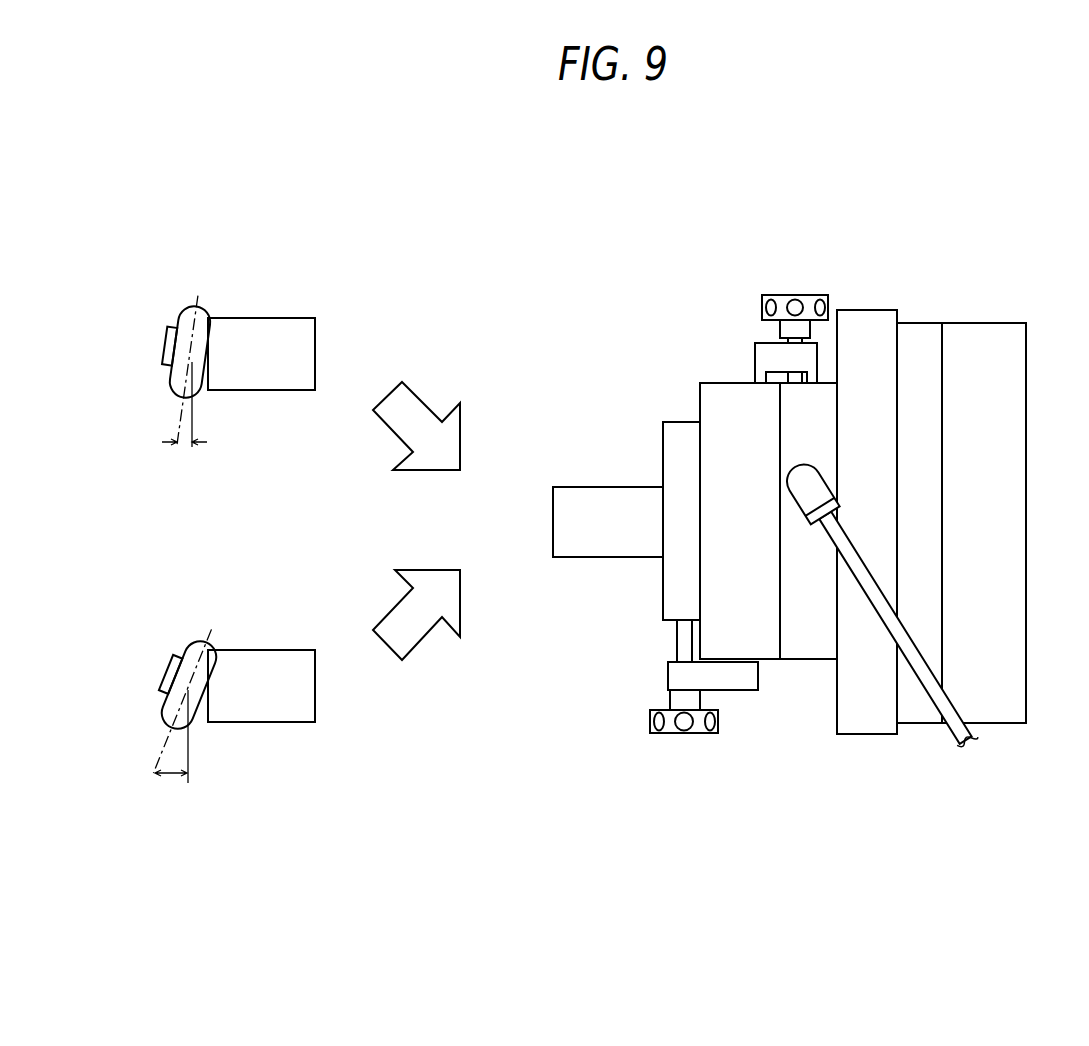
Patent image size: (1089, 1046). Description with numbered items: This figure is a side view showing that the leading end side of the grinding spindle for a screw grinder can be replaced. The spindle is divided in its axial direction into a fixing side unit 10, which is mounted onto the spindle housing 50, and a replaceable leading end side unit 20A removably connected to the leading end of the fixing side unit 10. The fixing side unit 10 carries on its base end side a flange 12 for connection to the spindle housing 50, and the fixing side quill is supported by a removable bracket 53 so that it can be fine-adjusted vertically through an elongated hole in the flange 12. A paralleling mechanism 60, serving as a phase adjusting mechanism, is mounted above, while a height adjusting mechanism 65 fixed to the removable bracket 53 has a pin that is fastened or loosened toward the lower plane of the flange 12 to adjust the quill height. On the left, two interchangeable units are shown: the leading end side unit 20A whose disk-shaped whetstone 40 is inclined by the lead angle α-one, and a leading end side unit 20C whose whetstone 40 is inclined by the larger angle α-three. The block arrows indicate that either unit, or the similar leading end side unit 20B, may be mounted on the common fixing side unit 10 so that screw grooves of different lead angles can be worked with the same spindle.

The fixing side unit 10 is at (600, 484).
The flange 12 is at (678, 421).
The leading end side unit 20A is at (318, 305).
The leading end side unit 20B is at (261, 354).
The leading end side unit 20C is at (273, 734).
The whetstone 40 is at (183, 318).
The spindle housing 50 is at (988, 322).
The removable bracket 53 is at (722, 380).
The paralleling mechanism 60 is at (812, 285).
The height adjusting mechanism 65 is at (685, 698).